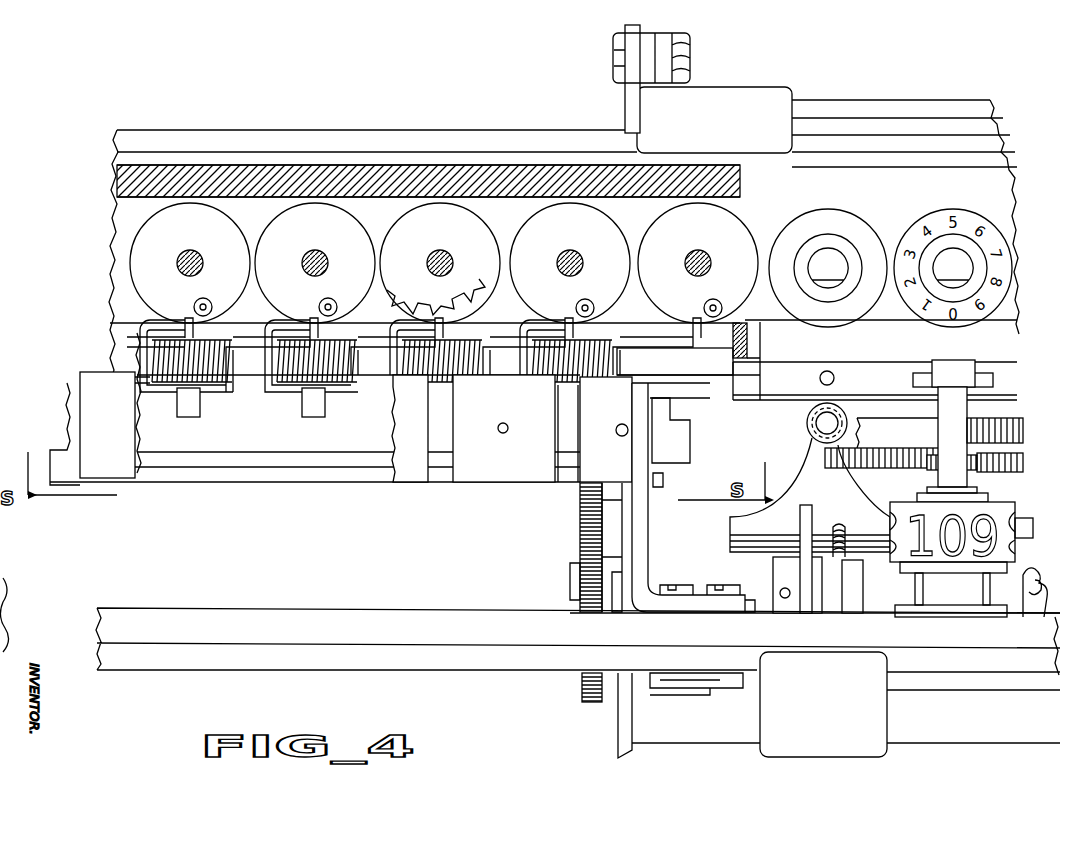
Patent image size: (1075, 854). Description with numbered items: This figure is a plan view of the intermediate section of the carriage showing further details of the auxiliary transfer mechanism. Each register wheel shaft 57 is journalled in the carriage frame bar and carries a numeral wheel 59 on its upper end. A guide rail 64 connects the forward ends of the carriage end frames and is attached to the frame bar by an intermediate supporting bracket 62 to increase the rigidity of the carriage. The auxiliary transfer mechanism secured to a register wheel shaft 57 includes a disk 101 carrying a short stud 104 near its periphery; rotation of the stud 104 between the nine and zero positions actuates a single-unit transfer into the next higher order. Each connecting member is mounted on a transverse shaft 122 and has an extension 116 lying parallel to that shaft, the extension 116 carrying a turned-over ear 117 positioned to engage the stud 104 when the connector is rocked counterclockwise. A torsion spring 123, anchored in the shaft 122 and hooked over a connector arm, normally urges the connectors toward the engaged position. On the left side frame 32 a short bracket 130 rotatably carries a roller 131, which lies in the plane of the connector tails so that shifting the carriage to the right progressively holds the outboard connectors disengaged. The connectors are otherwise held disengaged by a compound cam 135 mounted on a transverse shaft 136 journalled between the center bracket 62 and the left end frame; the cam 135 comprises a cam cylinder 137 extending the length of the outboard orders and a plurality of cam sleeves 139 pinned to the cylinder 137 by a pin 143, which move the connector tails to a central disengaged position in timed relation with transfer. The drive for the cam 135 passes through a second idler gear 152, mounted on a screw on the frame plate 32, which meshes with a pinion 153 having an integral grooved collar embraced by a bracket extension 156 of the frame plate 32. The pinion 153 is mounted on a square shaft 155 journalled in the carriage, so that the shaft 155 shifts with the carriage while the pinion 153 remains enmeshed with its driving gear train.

The left side frame 32 is at (625, 723).
The register wheel shaft 57 is at (702, 262).
The numeral wheel 59 is at (868, 241).
The intermediate supporting bracket 62 is at (642, 483).
The guide rail 64 is at (378, 616).
The disk 101 is at (527, 243).
The stud 104 is at (591, 304).
The extension 116 is at (398, 328).
The turned-over ear 117 is at (561, 326).
The transverse shaft 122 is at (380, 367).
The torsion spring 123 is at (202, 375).
The bracket 130 is at (837, 482).
The roller 131 is at (835, 408).
The compound cam 135 is at (438, 475).
The transverse shaft 136 is at (660, 415).
The cam cylinder 137 is at (568, 462).
The cam sleeve 139 is at (485, 462).
The pin 143 is at (498, 428).
The second idler gear 152 is at (583, 688).
The pinion 153 is at (585, 499).
The square shaft 155 is at (297, 475).
The bracket extension 156 is at (625, 575).